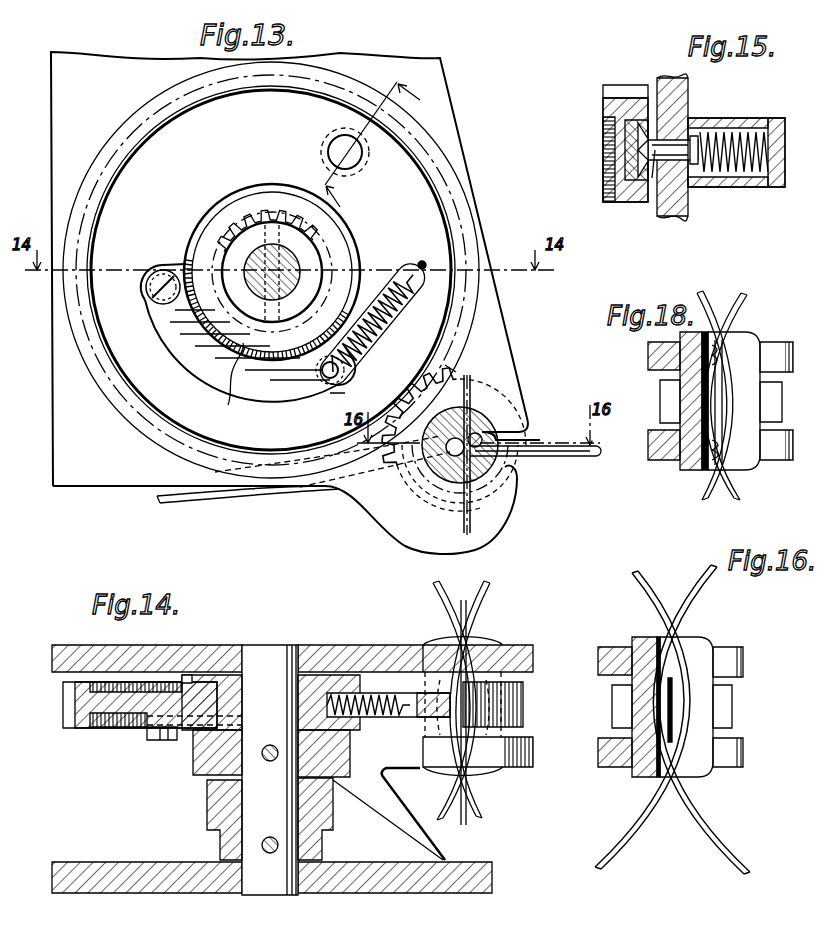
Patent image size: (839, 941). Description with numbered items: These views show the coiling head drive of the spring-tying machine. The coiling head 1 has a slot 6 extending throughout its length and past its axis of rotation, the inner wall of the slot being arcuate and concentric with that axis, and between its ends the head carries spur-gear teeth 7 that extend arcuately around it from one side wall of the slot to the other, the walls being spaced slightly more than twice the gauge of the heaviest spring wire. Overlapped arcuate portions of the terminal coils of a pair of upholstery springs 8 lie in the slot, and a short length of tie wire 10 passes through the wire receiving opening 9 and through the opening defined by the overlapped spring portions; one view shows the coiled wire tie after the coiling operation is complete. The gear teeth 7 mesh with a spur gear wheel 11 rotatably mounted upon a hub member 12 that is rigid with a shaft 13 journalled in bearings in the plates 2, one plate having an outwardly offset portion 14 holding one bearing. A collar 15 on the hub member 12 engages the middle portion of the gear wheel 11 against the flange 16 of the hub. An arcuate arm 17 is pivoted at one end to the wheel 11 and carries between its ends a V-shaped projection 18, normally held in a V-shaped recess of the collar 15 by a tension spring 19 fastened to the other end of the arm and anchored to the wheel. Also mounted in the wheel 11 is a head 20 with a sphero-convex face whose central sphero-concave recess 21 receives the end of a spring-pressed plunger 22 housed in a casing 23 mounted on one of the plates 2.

In FIG. 13, the head 1 is at (470, 410).
In FIG. 14, the head 1 is at (490, 642).
In FIG. 18, the head 1 is at (757, 470).
In FIG. 16, the head 1 is at (637, 629).
In FIG. 14, the plates 2 is at (530, 648).
In FIG. 15, the plates 2 is at (690, 98).
In FIG. 18, the plates 2 is at (648, 360).
In FIG. 16, the plates 2 is at (598, 657).
In FIG. 13, the slot 6 is at (490, 410).
In FIG. 18, the slot 6 is at (745, 455).
In FIG. 16, the slot 6 is at (700, 648).
In FIG. 13, the spur-gear teeth 7 is at (504, 432).
In FIG. 14, the spur-gear teeth 7 is at (524, 696).
In FIG. 18, the spur-gear teeth 7 is at (783, 400).
In FIG. 16, the spur-gear teeth 7 is at (612, 706).
In FIG. 13, the springs 8 is at (162, 504).
In FIG. 14, the springs 8 is at (452, 800).
In FIG. 18, the springs 8 is at (703, 294).
In FIG. 16, the springs 8 is at (645, 822).
In FIG. 13, the wire receiving opening 9 is at (495, 398).
In FIG. 14, the wire receiving opening 9 is at (455, 640).
In FIG. 13, the tie wire 10 is at (470, 518).
In FIG. 14, the tie wire 10 is at (468, 612).
In FIG. 18, the tie wire 10 is at (726, 366).
In FIG. 13, the spur gear wheel 11 is at (462, 364).
In FIG. 14, the spur gear wheel 11 is at (63, 702).
In FIG. 15, the spur gear wheel 11 is at (612, 85).
In FIG. 14, the hub member 12 is at (225, 760).
In FIG. 13, the shaft 13 is at (264, 256).
In FIG. 14, the shaft 13 is at (270, 770).
In FIG. 14, the outwardly offset portion 14 is at (350, 893).
In FIG. 13, the collar 15 is at (340, 254).
In FIG. 14, the collar 15 is at (196, 748).
In FIG. 14, the flange 16 is at (190, 675).
In FIG. 13, the arcuate arm 17 is at (202, 352).
In FIG. 14, the arcuate arm 17 is at (150, 728).
In FIG. 13, the V-shaped projection 18 is at (229, 382).
In FIG. 13, the tension spring 19 is at (386, 318).
In FIG. 14, the tension spring 19 is at (397, 718).
In FIG. 13, the head 20 is at (335, 154).
In FIG. 15, the head 20 is at (622, 151).
In FIG. 15, the sphero-concave recess 21 is at (645, 156).
In FIG. 15, the spring-pressed plunger 22 is at (652, 178).
In FIG. 15, the casing 23 is at (732, 187).